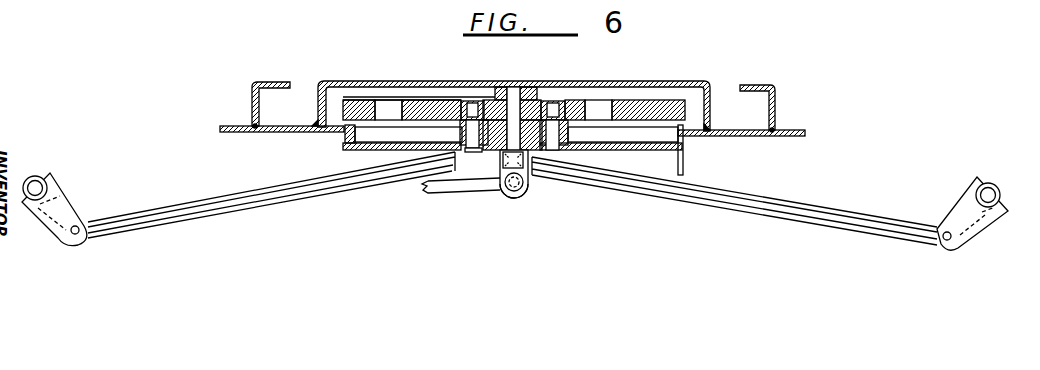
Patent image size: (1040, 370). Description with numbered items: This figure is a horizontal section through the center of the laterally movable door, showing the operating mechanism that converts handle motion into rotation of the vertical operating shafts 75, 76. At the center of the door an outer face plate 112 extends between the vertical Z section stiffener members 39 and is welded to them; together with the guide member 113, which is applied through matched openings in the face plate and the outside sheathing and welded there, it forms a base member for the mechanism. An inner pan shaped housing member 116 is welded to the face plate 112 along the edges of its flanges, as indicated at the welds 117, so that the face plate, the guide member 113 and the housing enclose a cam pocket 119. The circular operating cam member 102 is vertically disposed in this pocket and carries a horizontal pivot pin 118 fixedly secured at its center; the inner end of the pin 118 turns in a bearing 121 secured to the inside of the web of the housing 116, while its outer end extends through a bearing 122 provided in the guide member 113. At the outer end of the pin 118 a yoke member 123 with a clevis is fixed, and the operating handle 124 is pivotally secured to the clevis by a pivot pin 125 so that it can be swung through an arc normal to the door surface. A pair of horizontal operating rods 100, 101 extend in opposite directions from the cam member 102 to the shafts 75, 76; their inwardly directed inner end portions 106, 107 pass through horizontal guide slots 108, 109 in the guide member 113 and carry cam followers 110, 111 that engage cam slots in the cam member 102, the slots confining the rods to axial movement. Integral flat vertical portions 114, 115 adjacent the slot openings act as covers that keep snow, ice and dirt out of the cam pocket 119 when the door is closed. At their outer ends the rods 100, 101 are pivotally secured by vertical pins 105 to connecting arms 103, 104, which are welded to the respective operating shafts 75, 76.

The vertical Z section stiffener member 39 is at (250, 104).
The vertical operating shaft 75 is at (997, 183).
The vertical operating shaft 76 is at (35, 176).
The horizontal operating rod 100 is at (767, 215).
The horizontal operating rod 101 is at (290, 203).
The operating cam member 102 is at (643, 102).
The connecting arm 103 is at (962, 194).
The connecting arm 104 is at (75, 203).
The vertical pin 105 is at (77, 235).
The inner end portion of rod 100 106 is at (567, 135).
The inner end portion of rod 101 107 is at (457, 132).
The horizontal guide slot 108 is at (648, 138).
The horizontal guide slot 109 is at (373, 132).
The cam follower 110 is at (560, 101).
The cam follower 111 is at (473, 101).
The outer face plate 112 is at (300, 134).
The guide member 113 is at (388, 122).
The flat vertical portion 114 is at (684, 160).
The flat vertical portion 115 is at (353, 149).
The pan shaped housing member 116 is at (342, 81).
The weld 117 is at (316, 127).
The horizontal pivot pin 118 is at (517, 87).
The cam pocket 119 is at (427, 92).
The bearing 121 is at (540, 93).
The bearing 122 is at (535, 168).
The yoke member 123 is at (528, 192).
The operating handle 124 is at (450, 197).
The pivot pin 125 is at (510, 197).